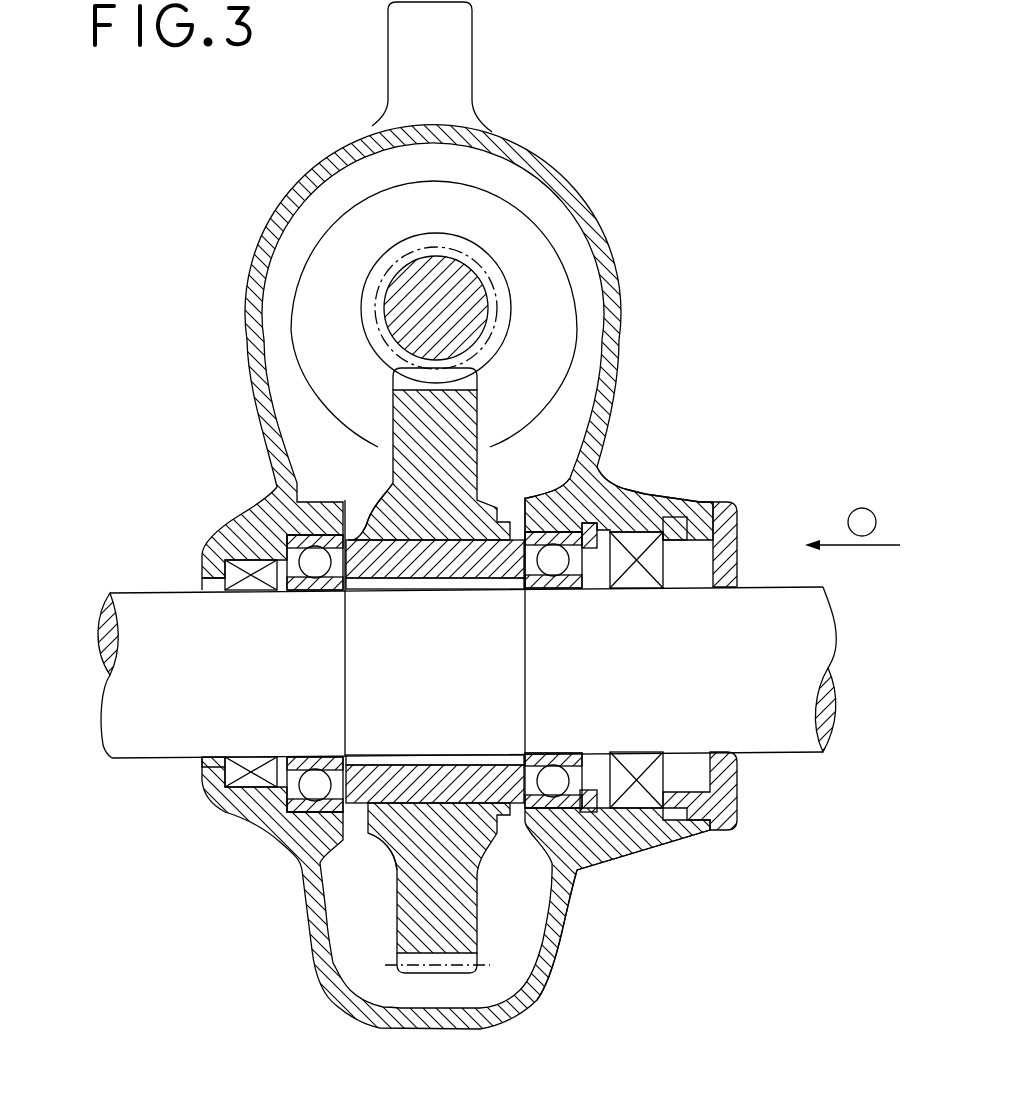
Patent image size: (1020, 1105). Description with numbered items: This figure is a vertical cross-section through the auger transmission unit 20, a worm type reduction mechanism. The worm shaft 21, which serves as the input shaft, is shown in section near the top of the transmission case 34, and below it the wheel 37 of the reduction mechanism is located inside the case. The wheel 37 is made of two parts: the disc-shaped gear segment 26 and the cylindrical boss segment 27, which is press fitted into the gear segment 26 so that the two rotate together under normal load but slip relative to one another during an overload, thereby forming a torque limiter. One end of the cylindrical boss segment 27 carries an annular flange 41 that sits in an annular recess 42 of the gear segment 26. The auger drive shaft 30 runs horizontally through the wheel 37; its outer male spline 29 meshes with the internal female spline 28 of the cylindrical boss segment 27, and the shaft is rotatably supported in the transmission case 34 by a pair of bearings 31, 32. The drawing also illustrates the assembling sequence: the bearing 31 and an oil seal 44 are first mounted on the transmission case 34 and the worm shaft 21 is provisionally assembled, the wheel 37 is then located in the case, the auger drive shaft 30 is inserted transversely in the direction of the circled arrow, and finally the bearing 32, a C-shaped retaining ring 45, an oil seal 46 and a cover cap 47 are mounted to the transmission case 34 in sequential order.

The auger transmission unit 20 is at (630, 110).
The worm shaft 21 is at (505, 272).
The gear segment 26 is at (377, 418).
The cylindrical boss segment 27 is at (360, 516).
The female spline 28 is at (455, 592).
The male spline 29 is at (423, 575).
The auger drive shaft 30 is at (140, 762).
The bearing 31 is at (296, 846).
The bearing 32 is at (578, 880).
The transmission case 34 is at (256, 237).
The wheel 37 is at (102, 355).
The annular flange 41 is at (607, 481).
The annular recess 42 is at (605, 412).
The oil seal 44 is at (238, 805).
The retaining ring 45 is at (592, 862).
The oil seal 46 is at (657, 809).
The cover cap 47 is at (738, 815).